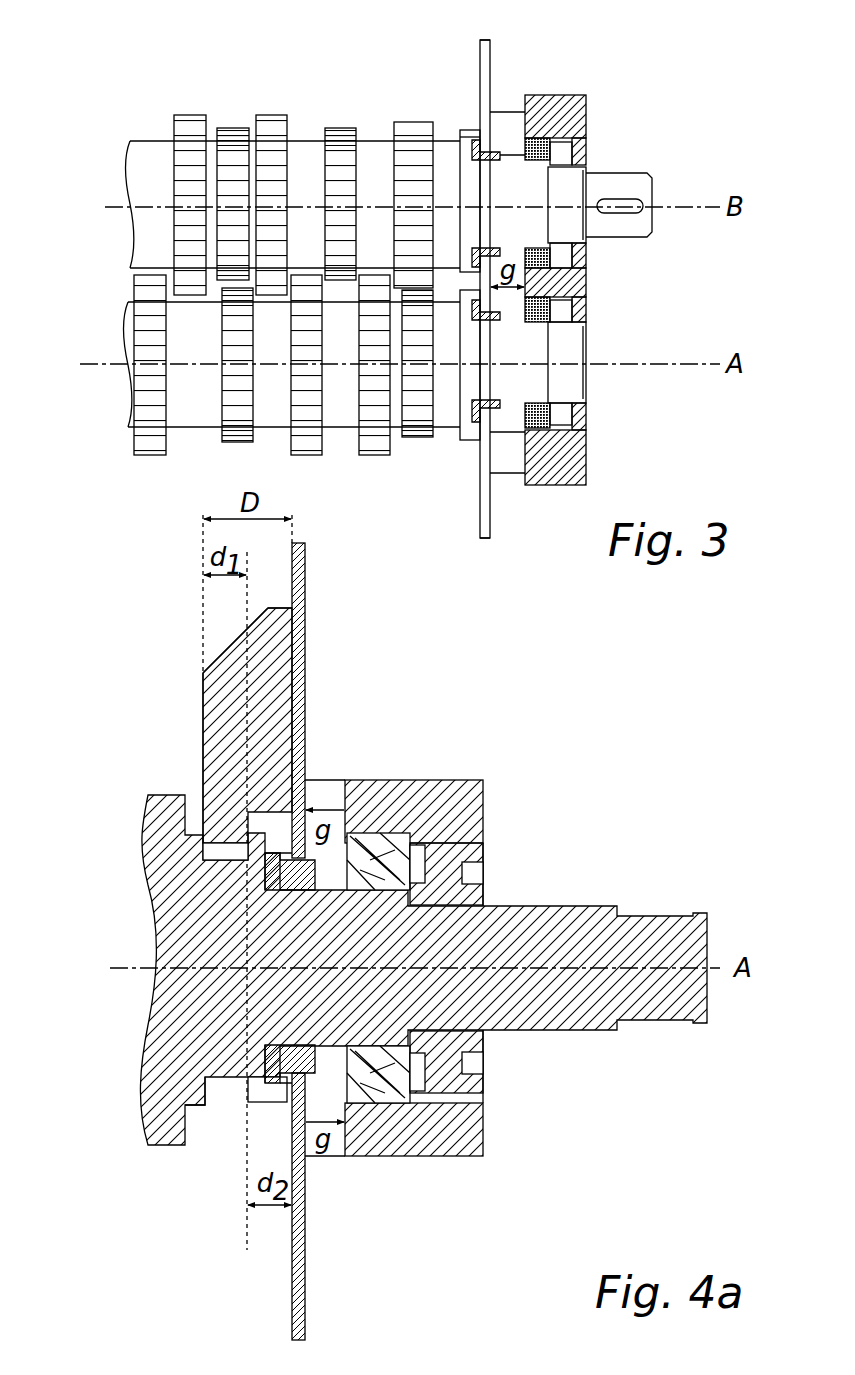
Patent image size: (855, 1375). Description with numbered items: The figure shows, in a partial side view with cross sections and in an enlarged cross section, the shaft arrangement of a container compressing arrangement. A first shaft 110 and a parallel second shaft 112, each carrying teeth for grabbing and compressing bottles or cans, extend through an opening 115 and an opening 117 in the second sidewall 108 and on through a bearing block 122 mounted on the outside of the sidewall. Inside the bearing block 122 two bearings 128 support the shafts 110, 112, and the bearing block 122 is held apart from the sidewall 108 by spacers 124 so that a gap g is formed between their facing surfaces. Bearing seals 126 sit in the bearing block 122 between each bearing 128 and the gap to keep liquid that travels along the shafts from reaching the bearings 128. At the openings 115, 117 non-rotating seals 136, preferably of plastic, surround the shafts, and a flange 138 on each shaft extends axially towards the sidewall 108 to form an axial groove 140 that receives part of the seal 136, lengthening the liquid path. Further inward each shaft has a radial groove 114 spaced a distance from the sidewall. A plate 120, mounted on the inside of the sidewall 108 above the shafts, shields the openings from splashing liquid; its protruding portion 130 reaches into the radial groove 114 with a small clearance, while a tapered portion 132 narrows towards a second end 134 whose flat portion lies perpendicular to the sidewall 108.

In FIG. 3, the second sidewall 108 is at (492, 62).
In FIG. 4A, the second sidewall 108 is at (307, 608).
In FIG. 3, the first shaft 110 is at (367, 363).
In FIG. 4A, the first shaft 110 is at (158, 888).
In FIG. 3, the second shaft 112 is at (407, 200).
In FIG. 3, the radial groove 114 is at (448, 137).
In FIG. 4A, the radial groove 114 is at (227, 1090).
In FIG. 3, the opening 115 is at (488, 355).
In FIG. 3, the opening 117 is at (490, 200).
In FIG. 4A, the plate 120 is at (220, 703).
In FIG. 3, the bearing block 122 is at (573, 93).
In FIG. 4A, the bearing block 122 is at (478, 779).
In FIG. 3, the spacer 124 is at (503, 123).
In FIG. 4A, the spacer 124 is at (333, 797).
In FIG. 3, the bearing seal 126 is at (540, 138).
In FIG. 4A, the bearing seal 126 is at (390, 833).
In FIG. 3, the bearing 128 is at (563, 152).
In FIG. 4A, the bearing 128 is at (462, 866).
In FIG. 4A, the protruding portion 130 is at (203, 802).
In FIG. 4A, the tapered portion 132 is at (233, 653).
In FIG. 4A, the second end 134 is at (280, 605).
In FIG. 3, the seal 136 is at (482, 40).
In FIG. 4A, the seal 136 is at (265, 880).
In FIG. 3, the flange 138 is at (470, 130).
In FIG. 4A, the flange 138 is at (281, 830).
In FIG. 3, the axial groove 140 is at (472, 148).
In FIG. 4A, the axial groove 140 is at (267, 875).